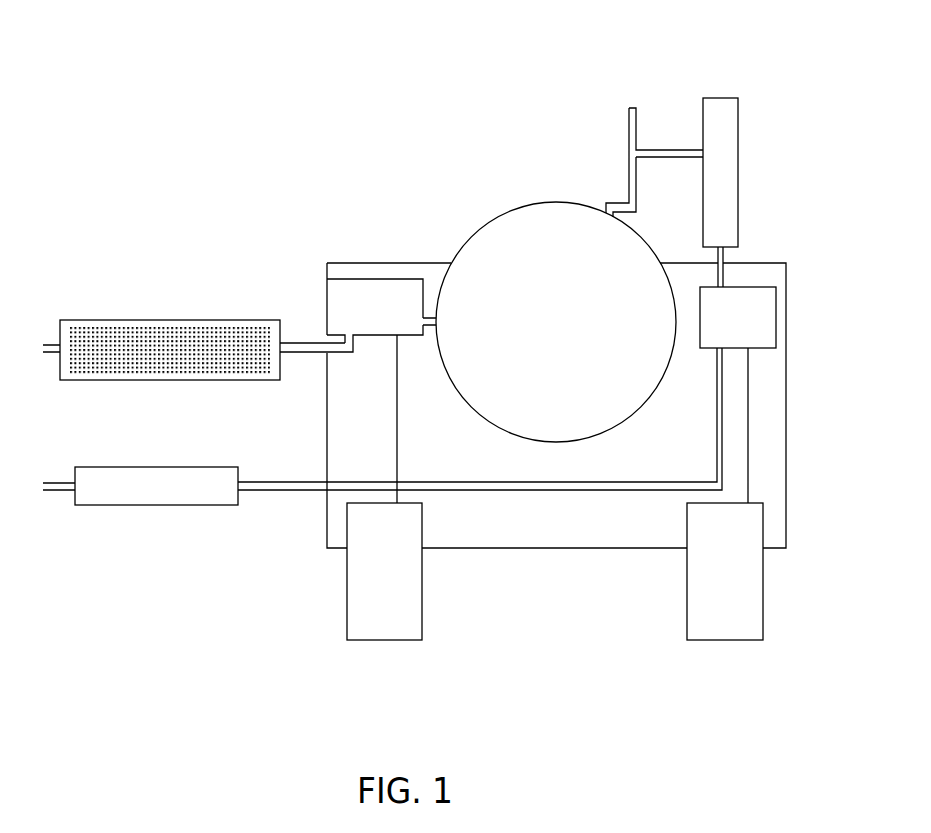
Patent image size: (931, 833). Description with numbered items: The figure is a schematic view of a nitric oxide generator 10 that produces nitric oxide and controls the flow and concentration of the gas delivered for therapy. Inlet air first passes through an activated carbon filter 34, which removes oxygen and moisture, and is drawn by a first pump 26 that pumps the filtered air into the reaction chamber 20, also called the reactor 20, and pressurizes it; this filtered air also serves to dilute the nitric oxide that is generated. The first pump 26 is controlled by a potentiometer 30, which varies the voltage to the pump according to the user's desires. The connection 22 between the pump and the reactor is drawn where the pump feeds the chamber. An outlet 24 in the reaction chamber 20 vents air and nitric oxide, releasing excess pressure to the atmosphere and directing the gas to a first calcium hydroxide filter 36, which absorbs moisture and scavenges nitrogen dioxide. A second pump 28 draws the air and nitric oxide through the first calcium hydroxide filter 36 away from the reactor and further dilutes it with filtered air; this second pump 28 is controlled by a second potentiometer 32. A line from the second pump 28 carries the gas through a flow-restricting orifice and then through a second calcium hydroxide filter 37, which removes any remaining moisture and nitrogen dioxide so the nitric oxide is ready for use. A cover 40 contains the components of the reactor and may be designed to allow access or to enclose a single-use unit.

The nitric oxide generator 10 is at (198, 72).
The reaction chamber 20 is at (523, 205).
The inlet 22 is at (440, 320).
The outlet 24 is at (613, 216).
The first pump 26 is at (373, 279).
The second pump 28 is at (776, 325).
The potentiometer 30 is at (383, 640).
The second potentiometer 32 is at (763, 613).
The activated carbon filter 34 is at (158, 320).
The first calcium hydroxide filter 36 is at (738, 190).
The second calcium hydroxide filter 37 is at (160, 505).
The cover 40 is at (547, 548).